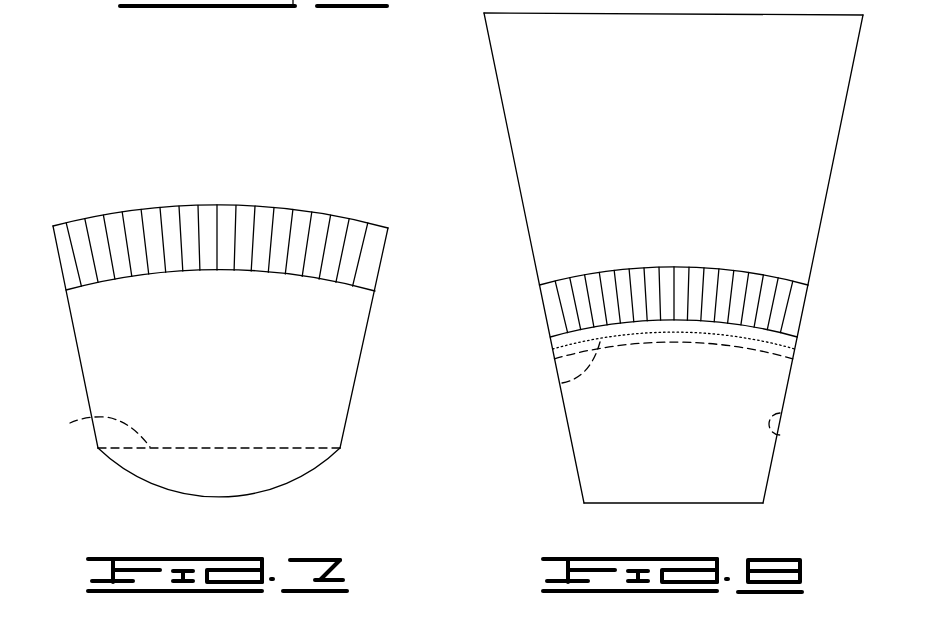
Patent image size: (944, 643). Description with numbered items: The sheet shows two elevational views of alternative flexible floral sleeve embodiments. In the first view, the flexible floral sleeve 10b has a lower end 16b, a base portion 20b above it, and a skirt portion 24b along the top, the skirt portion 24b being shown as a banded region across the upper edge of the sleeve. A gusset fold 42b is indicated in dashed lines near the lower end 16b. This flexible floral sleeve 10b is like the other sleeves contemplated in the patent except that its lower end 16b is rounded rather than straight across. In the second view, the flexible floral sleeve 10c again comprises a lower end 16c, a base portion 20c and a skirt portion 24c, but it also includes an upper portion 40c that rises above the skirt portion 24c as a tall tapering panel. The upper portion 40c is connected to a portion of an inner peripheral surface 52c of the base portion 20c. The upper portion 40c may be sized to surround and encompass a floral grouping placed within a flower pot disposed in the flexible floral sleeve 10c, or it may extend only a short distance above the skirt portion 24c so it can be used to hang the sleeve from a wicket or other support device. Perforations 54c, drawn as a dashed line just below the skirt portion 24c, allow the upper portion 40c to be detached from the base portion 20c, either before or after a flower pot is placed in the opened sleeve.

In FIG. 7, the flexible floral sleeve 10b is at (382, 362).
In FIG. 7, the lower end 16b is at (298, 477).
In FIG. 7, the base portion 20b is at (353, 388).
In FIG. 7, the skirt portion 24b is at (385, 255).
In FIG. 7, the gusset fold 42b is at (89, 432).
In FIG. 8, the flexible floral sleeve 10c is at (817, 386).
In FIG. 8, the lower end 16c is at (622, 505).
In FIG. 8, the base portion 20c is at (770, 463).
In FIG. 8, the skirt portion 24c is at (772, 278).
In FIG. 8, the upper portion 40c is at (495, 69).
In FIG. 8, the inner peripheral surface 52c is at (780, 435).
In FIG. 8, the perforations 54c is at (562, 383).